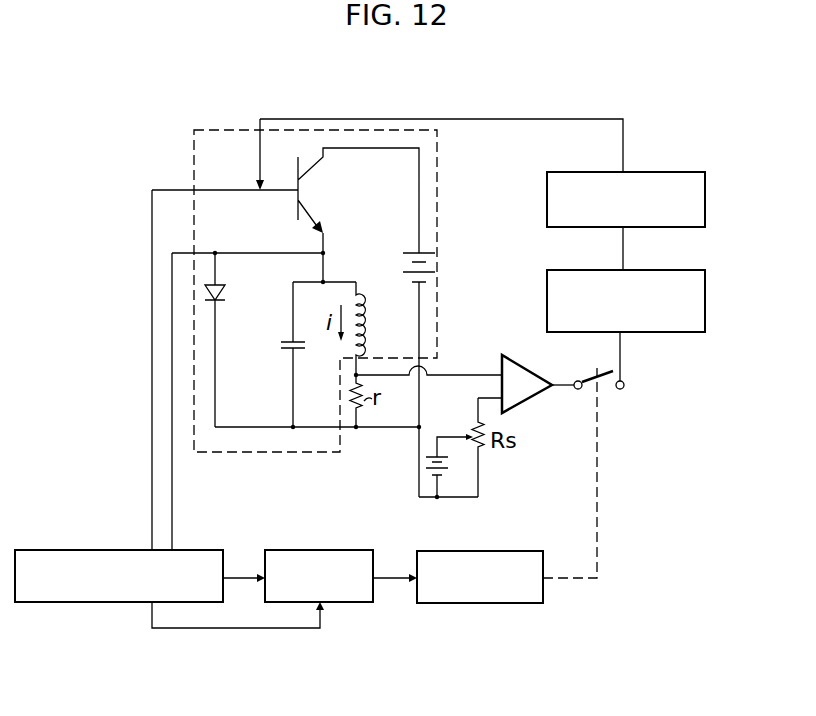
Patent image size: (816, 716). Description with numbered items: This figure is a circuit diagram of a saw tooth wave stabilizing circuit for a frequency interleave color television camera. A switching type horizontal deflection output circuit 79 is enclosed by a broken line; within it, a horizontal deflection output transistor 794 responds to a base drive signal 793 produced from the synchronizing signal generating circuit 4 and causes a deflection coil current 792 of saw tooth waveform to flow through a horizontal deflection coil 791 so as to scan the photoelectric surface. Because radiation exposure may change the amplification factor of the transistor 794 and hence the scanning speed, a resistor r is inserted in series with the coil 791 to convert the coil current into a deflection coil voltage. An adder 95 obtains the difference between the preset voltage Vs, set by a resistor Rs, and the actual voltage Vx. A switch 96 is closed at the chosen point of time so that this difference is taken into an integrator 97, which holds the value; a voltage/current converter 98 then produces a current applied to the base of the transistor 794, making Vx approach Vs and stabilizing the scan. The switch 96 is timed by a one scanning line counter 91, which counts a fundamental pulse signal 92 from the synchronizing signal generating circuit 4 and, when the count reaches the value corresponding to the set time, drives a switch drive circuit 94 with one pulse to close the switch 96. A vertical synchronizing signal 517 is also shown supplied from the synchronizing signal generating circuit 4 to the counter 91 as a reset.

The horizontal deflection output circuit 79 is at (228, 128).
The horizontal deflection output transistor 794 is at (312, 158).
The base drive signal 793 is at (151, 268).
The deflection coil current 792 is at (315, 326).
The horizontal deflection coil 791 is at (364, 318).
The voltage/current converter 98 is at (672, 170).
The integrator 97 is at (665, 334).
The switch 96 is at (605, 389).
The adder 95 is at (525, 390).
The switch drive circuit 94 is at (515, 549).
The one scanning line counter 91 is at (325, 548).
The fundamental pulse signal 92 is at (247, 572).
The synchronizing signal generating circuit 4 is at (130, 548).
The vertical synchronizing signal 517 is at (242, 630).